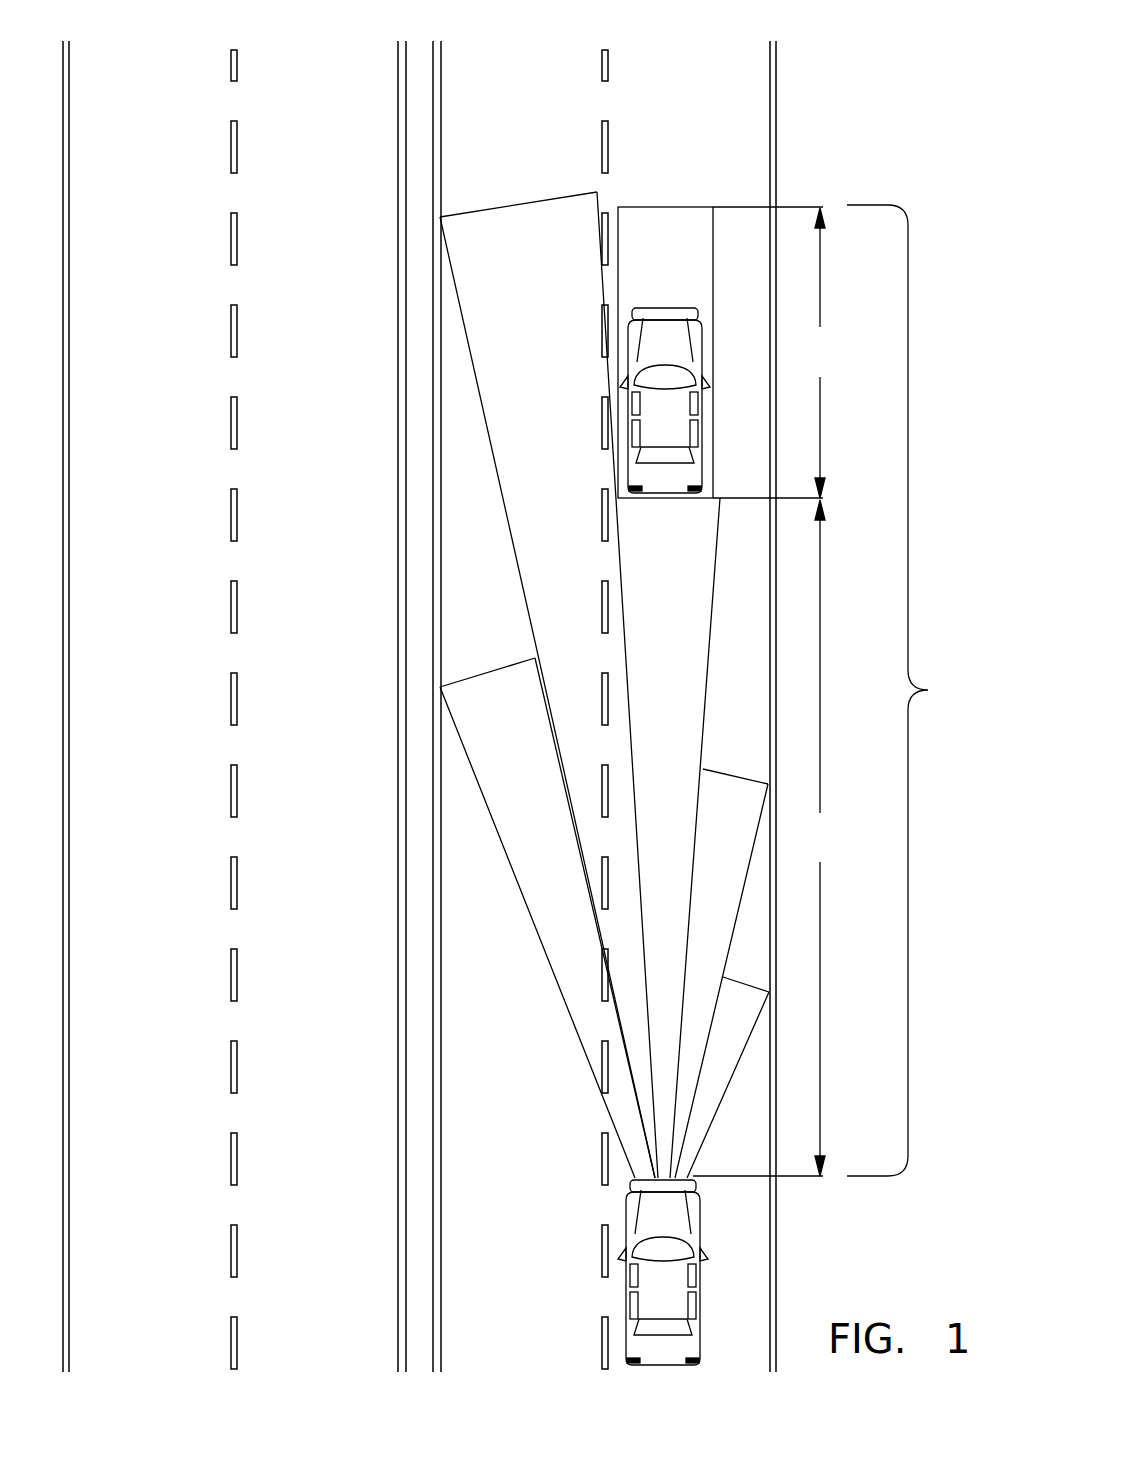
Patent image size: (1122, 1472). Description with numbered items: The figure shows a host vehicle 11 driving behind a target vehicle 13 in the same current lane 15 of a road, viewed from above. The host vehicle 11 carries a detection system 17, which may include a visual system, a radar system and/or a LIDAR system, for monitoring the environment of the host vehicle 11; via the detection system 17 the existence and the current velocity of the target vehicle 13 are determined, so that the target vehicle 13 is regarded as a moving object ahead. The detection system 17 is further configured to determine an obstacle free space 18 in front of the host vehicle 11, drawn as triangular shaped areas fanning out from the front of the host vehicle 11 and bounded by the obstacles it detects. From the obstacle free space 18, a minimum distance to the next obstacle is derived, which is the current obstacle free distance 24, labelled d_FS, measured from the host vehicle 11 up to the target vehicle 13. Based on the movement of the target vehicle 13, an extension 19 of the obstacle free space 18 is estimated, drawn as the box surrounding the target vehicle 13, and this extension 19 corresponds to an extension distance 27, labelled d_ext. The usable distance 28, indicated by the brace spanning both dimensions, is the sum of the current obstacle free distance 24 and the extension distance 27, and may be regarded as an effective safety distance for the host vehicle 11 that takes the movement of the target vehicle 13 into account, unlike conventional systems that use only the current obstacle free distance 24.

The host vehicle 11 is at (677, 1247).
The target vehicle 13 is at (683, 340).
The current lane 15 is at (730, 52).
The detection system 17 is at (744, 1210).
The obstacle free space 18 is at (660, 1012).
The extension 19 is at (647, 227).
The current obstacle free distance 24 is at (828, 825).
The extension distance 27 is at (837, 342).
The usable distance 28 is at (905, 690).